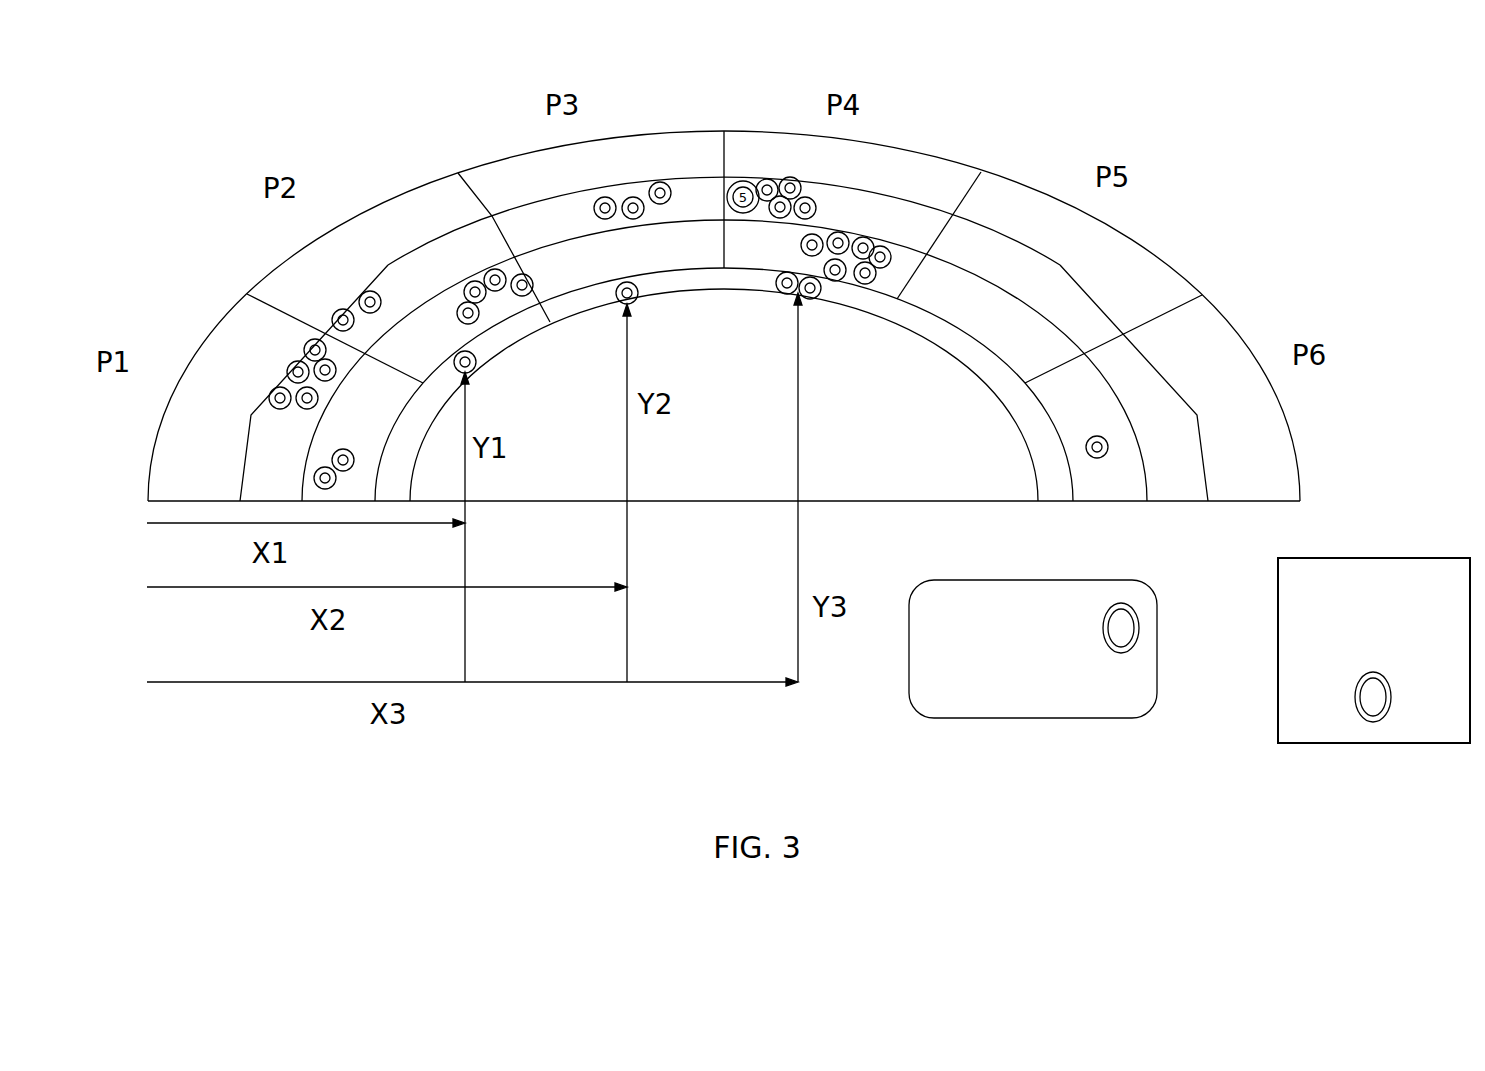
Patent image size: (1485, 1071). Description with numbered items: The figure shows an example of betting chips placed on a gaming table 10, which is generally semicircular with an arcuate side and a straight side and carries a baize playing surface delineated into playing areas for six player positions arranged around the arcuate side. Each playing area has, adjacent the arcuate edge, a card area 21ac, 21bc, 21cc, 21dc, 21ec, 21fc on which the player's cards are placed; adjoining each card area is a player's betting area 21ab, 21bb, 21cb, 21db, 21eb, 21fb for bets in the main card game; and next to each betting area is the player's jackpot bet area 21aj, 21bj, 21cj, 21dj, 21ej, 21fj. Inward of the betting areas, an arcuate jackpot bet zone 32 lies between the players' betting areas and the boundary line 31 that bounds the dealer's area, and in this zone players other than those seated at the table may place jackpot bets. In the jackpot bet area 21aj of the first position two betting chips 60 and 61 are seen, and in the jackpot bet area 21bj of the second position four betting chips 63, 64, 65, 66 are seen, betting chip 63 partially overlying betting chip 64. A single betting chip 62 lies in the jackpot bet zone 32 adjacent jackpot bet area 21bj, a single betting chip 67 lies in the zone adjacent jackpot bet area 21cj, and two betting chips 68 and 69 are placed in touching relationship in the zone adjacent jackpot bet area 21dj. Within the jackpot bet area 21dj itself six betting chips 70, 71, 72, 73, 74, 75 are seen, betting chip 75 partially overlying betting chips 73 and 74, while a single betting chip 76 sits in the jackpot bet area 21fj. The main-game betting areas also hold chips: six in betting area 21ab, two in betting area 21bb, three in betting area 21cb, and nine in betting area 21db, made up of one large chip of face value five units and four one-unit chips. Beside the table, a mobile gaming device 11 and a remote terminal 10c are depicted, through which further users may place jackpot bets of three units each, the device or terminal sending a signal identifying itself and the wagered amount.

The gaming table 10 is at (1228, 319).
The remote terminal 10c is at (1373, 558).
The mobile gaming device 11 is at (1157, 637).
The boundary line 31 is at (1007, 410).
The jackpot bet zone 32 is at (386, 456).
The betting chip 60 is at (326, 490).
The betting chip 61 is at (334, 458).
The betting chip 62 is at (474, 370).
The betting chip 63 is at (458, 309).
The betting chip 64 is at (483, 300).
The betting chip 65 is at (491, 271).
The betting chip 66 is at (550, 326).
The betting chip 67 is at (634, 301).
The betting chip 68 is at (781, 291).
The betting chip 69 is at (809, 300).
The betting chip 70 is at (802, 252).
The betting chip 71 is at (839, 281).
The betting chip 72 is at (836, 232).
The betting chip 73 is at (860, 238).
The betting chip 74 is at (868, 284).
The betting chip 75 is at (880, 246).
The betting chip 76 is at (1106, 442).
The card area 21ac is at (205, 429).
The player's betting area 21ab is at (270, 481).
The jackpot bet area 21aj is at (366, 407).
The card area 21bc is at (360, 243).
The player's betting area 21bb is at (439, 266).
The jackpot bet area 21bj is at (410, 345).
The card area 21cc is at (536, 176).
The player's betting area 21cb is at (542, 223).
The jackpot bet area 21cj is at (585, 264).
The card area 21dc is at (763, 156).
The player's betting area 21db is at (912, 226).
The jackpot bet area 21dj is at (760, 251).
The card area 21ec is at (1013, 216).
The player's betting area 21eb is at (1084, 318).
The jackpot bet area 21ej is at (974, 304).
The card area 21fc is at (1194, 336).
The player's betting area 21fb is at (1127, 363).
The jackpot bet area 21fj is at (1080, 394).